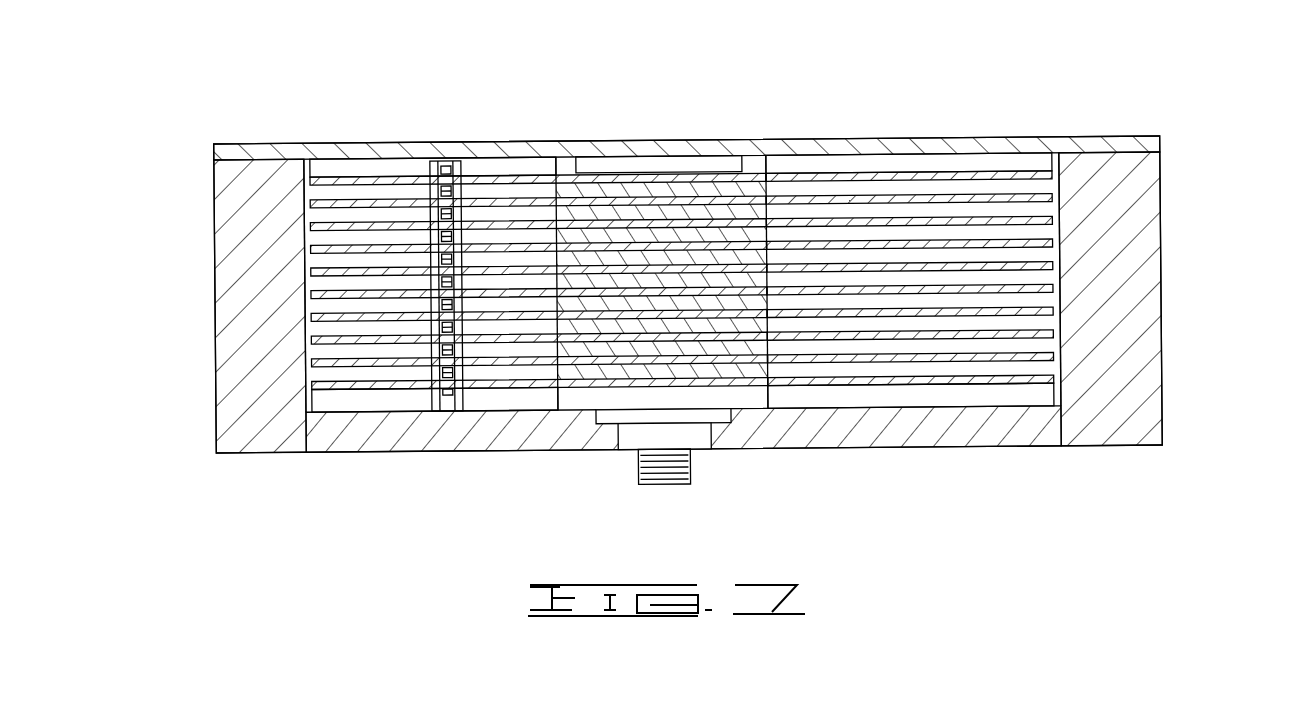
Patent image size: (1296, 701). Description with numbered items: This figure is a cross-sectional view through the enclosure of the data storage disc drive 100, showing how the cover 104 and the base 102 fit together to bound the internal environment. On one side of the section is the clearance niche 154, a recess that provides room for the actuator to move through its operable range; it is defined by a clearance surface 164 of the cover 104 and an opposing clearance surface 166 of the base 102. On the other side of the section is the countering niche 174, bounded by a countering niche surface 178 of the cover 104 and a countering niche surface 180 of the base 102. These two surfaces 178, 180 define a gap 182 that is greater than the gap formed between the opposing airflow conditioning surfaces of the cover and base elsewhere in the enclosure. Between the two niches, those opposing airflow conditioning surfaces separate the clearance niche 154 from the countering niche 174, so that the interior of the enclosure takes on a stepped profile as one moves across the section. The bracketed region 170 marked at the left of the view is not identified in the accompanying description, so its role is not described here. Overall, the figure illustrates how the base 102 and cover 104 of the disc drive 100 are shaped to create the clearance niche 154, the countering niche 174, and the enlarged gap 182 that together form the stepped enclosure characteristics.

The data storage disc drive 100 is at (421, 66).
The base 102 is at (807, 427).
The cover 104 is at (678, 140).
The clearance niche 154 is at (350, 167).
The clearance surface 164 is at (513, 163).
The clearance surface 166 is at (478, 404).
The left end block 170 is at (203, 162).
The countering niche 174 is at (995, 165).
The countering niche surface 178 is at (857, 156).
The countering niche surface 180 is at (910, 407).
The gap 182 is at (1170, 153).